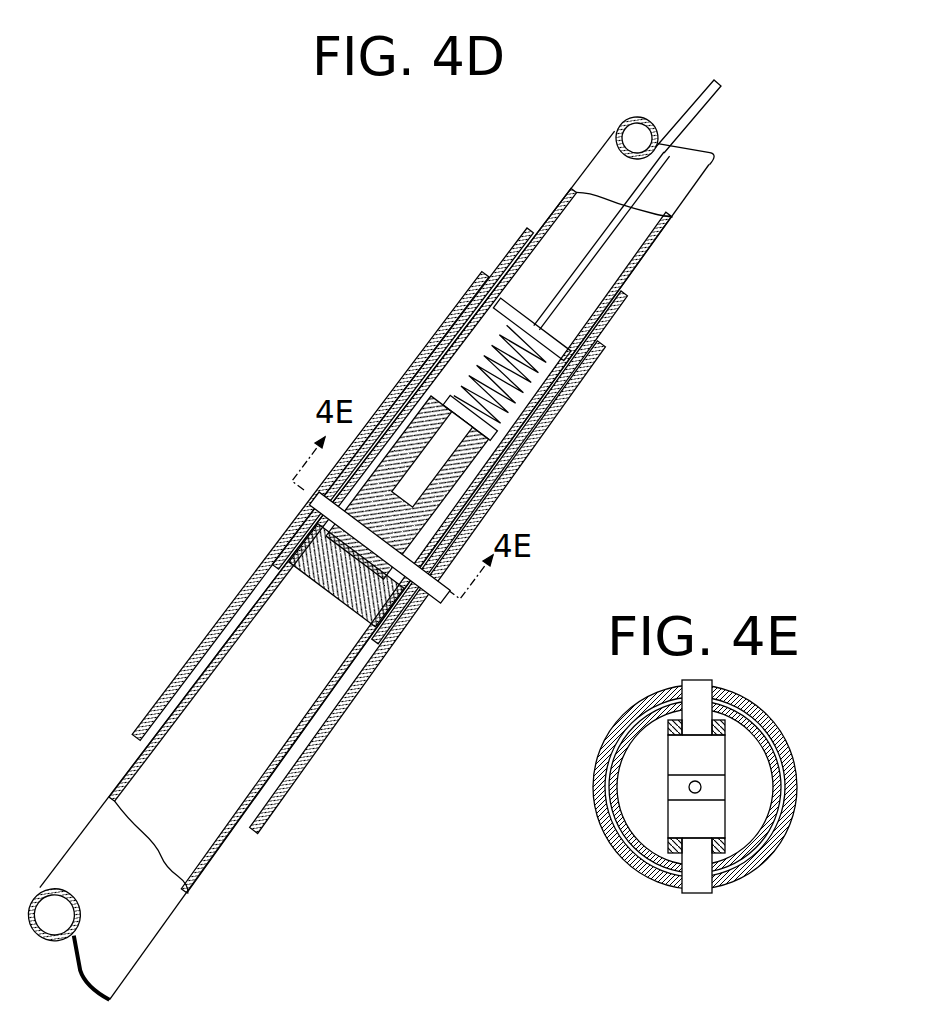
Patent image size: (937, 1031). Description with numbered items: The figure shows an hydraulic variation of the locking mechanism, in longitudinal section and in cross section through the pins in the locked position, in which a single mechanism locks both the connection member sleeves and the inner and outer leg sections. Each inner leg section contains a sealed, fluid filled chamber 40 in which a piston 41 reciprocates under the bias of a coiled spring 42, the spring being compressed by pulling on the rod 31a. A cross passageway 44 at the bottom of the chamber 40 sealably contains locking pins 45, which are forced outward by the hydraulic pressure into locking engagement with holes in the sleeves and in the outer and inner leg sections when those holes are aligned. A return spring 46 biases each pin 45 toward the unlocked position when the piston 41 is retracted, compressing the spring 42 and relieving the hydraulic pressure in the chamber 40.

In FIG. 4D, the rod 31a is at (694, 129).
In FIG. 4D, the sealed fluid filled chamber 40 is at (460, 523).
In FIG. 4E, the sealed fluid filled chamber 40 is at (678, 788).
In FIG. 4D, the piston 41 is at (515, 470).
In FIG. 4D, the coiled spring 42 is at (578, 403).
In FIG. 4D, the cross passageway 44 is at (415, 606).
In FIG. 4D, the locking pin 45 is at (318, 517).
In FIG. 4E, the locking pin 45 is at (718, 818).
In FIG. 4E, the return spring 46 is at (725, 723).